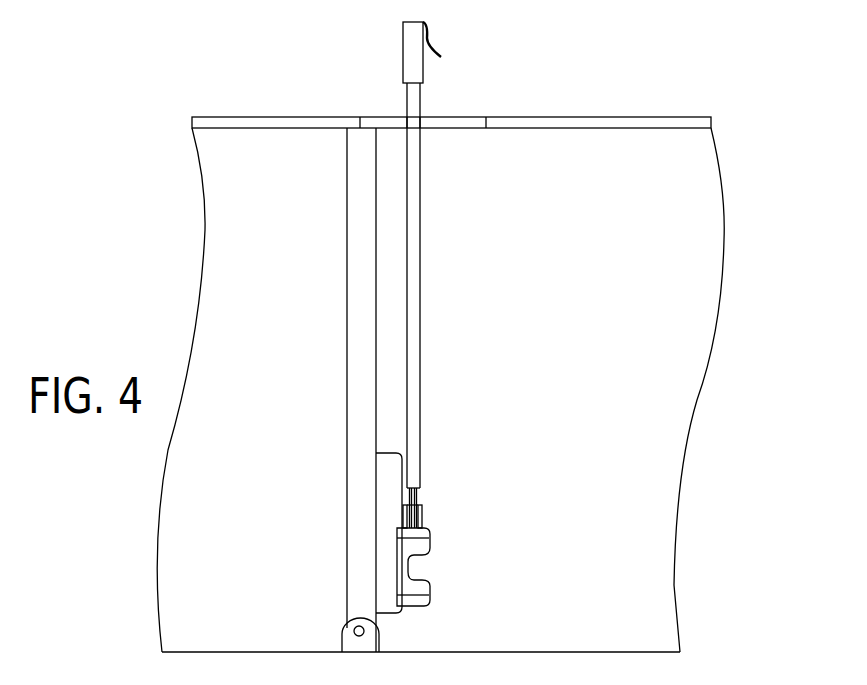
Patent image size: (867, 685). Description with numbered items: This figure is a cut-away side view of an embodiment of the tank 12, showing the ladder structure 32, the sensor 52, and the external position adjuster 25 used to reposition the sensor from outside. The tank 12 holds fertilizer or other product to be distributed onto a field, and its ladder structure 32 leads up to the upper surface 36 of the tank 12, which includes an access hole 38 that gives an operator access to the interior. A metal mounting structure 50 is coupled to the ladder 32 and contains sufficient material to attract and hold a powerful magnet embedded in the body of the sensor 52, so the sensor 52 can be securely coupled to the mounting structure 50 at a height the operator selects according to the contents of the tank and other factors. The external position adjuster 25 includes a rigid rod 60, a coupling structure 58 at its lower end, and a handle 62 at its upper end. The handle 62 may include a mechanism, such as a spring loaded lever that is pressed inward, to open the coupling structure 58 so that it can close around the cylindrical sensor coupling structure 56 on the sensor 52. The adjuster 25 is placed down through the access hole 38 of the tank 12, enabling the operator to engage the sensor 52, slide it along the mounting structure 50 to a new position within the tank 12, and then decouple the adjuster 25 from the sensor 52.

The tank 12 is at (754, 211).
The external position adjuster 25 is at (406, 255).
The ladder structure 32 is at (344, 395).
The upper surface 36 is at (602, 120).
The access hole 38 is at (466, 104).
The mounting structure 50 is at (386, 497).
The sensor 52 is at (404, 563).
The sensor coupling structure 56 is at (421, 515).
The coupling structure 58 is at (449, 528).
The rigid rod 60 is at (412, 282).
The handle 62 is at (412, 55).